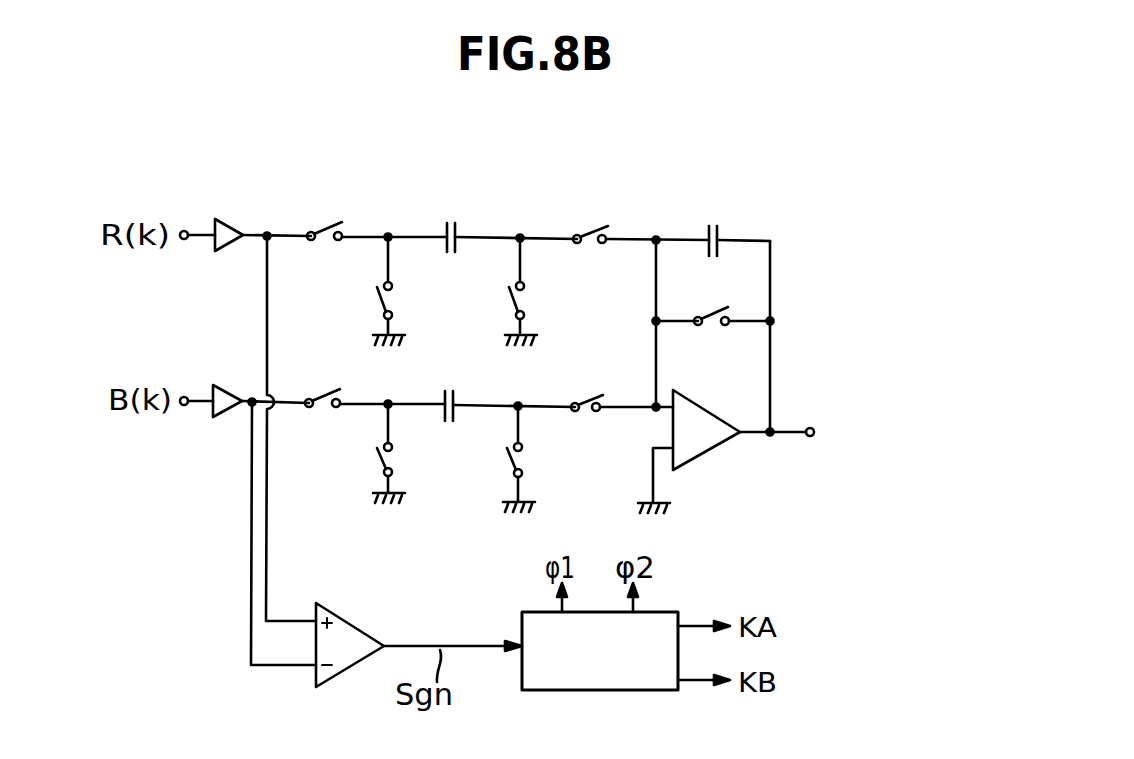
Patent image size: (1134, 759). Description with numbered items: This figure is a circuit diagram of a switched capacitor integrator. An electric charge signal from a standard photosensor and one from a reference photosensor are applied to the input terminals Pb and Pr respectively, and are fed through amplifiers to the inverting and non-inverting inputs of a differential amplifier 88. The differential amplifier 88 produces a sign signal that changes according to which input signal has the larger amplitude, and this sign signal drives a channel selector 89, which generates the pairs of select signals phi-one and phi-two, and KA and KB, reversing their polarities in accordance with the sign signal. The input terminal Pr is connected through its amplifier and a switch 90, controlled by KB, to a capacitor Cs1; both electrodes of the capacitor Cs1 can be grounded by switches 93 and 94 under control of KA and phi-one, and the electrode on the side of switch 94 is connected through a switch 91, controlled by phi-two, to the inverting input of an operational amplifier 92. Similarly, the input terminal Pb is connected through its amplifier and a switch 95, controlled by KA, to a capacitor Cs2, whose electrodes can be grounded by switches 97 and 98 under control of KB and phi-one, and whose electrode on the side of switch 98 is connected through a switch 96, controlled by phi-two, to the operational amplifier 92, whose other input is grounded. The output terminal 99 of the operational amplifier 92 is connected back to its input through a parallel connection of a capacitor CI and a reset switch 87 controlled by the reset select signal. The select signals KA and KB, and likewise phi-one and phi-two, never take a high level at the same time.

The reset switch (φRST) 87 is at (715, 312).
The differential amplifier 88 is at (352, 617).
The channel selector 89 is at (615, 690).
The switch 90 is at (336, 222).
The switch 91 is at (600, 228).
The operational amplifier 92 is at (715, 445).
The switch 93 is at (393, 303).
The switch 94 is at (524, 304).
The switch 95 is at (322, 394).
The switch 96 is at (590, 400).
The switch 97 is at (378, 455).
The switch 98 is at (522, 460).
The output terminal 99 is at (812, 437).
The input terminal Pr is at (184, 240).
The input terminal Pb is at (184, 406).
The capacitor Cs1 is at (448, 222).
The capacitor Cs2 is at (448, 392).
The capacitor CI is at (716, 224).